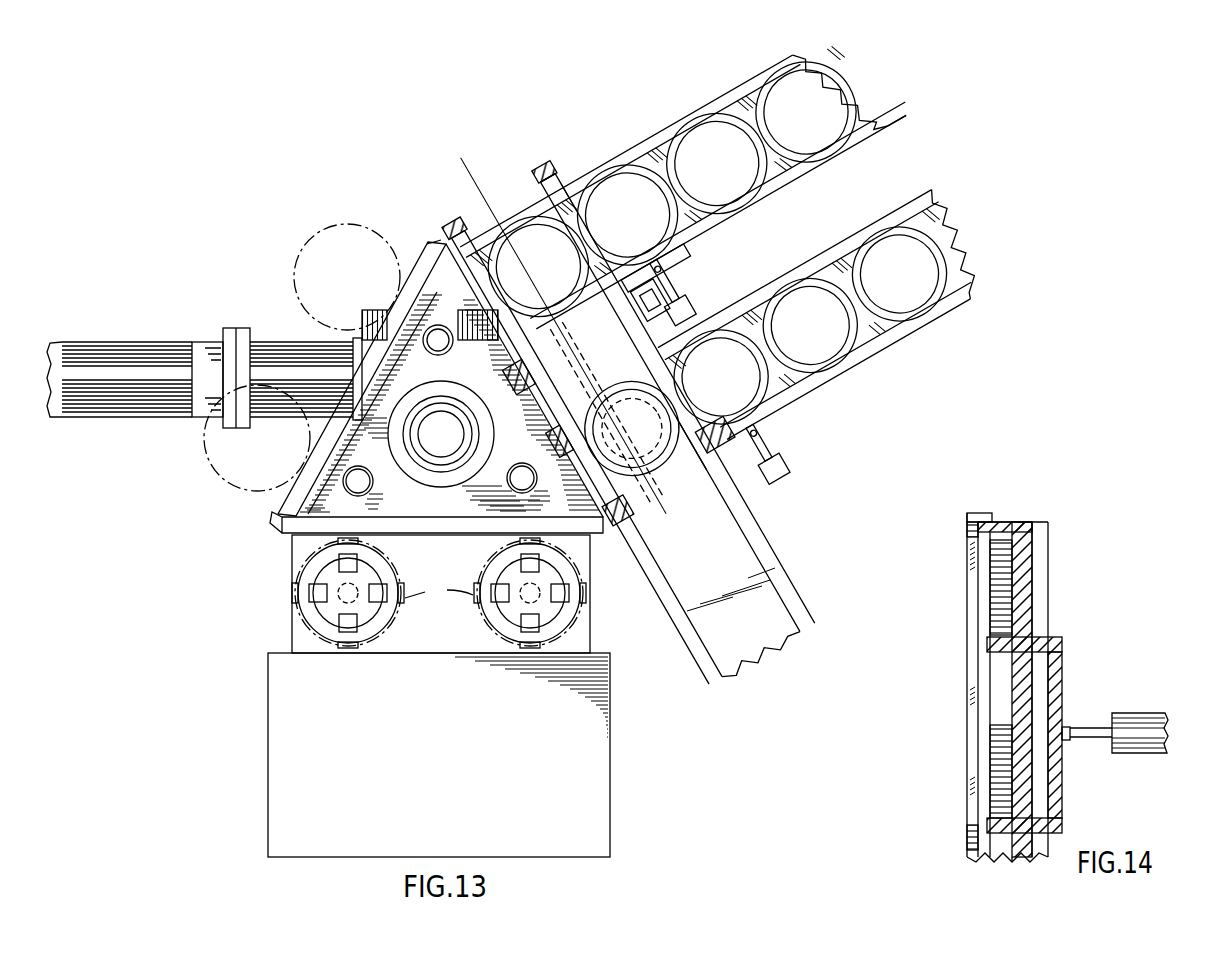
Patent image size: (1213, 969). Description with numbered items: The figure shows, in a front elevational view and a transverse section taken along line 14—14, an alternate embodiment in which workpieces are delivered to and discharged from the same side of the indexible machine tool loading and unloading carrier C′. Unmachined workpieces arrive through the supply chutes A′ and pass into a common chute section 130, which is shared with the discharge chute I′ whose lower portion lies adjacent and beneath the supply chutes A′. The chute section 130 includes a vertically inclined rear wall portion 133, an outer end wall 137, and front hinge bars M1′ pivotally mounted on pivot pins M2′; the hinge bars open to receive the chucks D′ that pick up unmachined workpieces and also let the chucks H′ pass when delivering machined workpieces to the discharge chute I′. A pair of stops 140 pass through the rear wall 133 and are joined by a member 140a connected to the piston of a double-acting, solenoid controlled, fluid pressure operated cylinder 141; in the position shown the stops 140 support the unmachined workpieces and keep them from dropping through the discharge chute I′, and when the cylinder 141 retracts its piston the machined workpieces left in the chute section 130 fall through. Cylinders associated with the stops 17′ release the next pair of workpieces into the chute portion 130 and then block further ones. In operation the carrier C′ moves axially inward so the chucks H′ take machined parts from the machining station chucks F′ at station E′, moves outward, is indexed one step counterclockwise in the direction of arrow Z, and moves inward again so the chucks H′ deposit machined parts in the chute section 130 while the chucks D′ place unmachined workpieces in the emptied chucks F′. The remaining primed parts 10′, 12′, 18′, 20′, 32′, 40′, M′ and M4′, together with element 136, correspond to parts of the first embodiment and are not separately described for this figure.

In FIG. 13, the section line 14 is at (448, 166).
In FIG. 13, the common chute section 130 is at (514, 214).
In FIG. 13, the locating bar 136 is at (546, 190).
In FIG. 13, the mounting fixture M′ is at (558, 182).
In FIG. 13, the supply chutes A′ is at (631, 140).
In FIG. 13, the upper cylinder block 10′ is at (854, 162).
In FIG. 13, the stops 17′ is at (700, 262).
In FIG. 13, the clamp bolt 18′ is at (696, 297).
In FIG. 13, the member 140a is at (655, 312).
In FIG. 14, the member 140a is at (1060, 772).
In FIG. 13, the lower cylinder block 12′ is at (868, 362).
In FIG. 13, the indexible machine tool loading and unloading carrier C′ is at (416, 238).
In FIG. 13, the chucks D′ is at (323, 248).
In FIG. 13, the pivot pins M2′ is at (462, 222).
In FIG. 14, the pivot pins M2′ is at (967, 522).
In FIG. 13, the triangular head 20′ is at (466, 322).
In FIG. 13, the front hinge bars M1′ is at (488, 308).
In FIG. 14, the front hinge bars M1′ is at (967, 603).
In FIG. 13, the arrow Z is at (376, 404).
In FIG. 13, the clamp block M4′ is at (535, 368).
In FIG. 13, the bolt hole 40′ is at (357, 465).
In FIG. 13, the outer end wall 137 is at (558, 436).
In FIG. 13, the fluid pressure operated cylinder 141 is at (618, 404).
In FIG. 14, the fluid pressure operated cylinder 141 is at (1128, 720).
In FIG. 13, the stops 140 is at (704, 447).
In FIG. 14, the stops 140 is at (1045, 645).
In FIG. 13, the discharge chute I′ is at (756, 526).
In FIG. 14, the discharge chute I′ is at (1008, 866).
In FIG. 13, the rear wall portion 133 is at (717, 575).
In FIG. 14, the rear wall portion 133 is at (1025, 598).
In FIG. 13, the base plate 32′ is at (460, 518).
In FIG. 13, the chucks H′ is at (298, 575).
In FIG. 13, the machining station chucks F′ is at (439, 594).
In FIG. 13, the machining station E′ is at (600, 595).